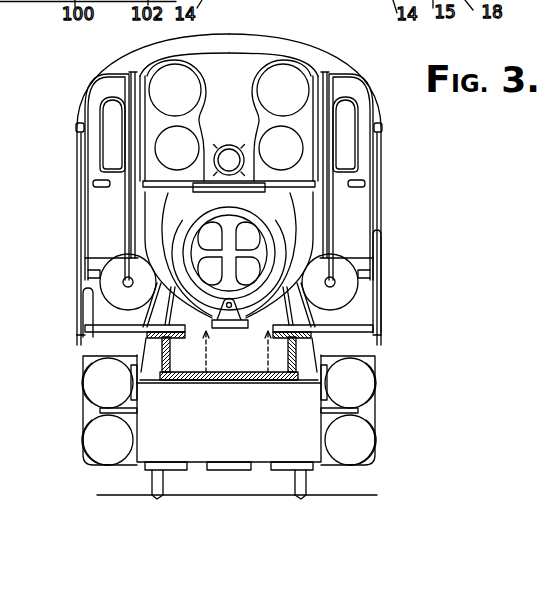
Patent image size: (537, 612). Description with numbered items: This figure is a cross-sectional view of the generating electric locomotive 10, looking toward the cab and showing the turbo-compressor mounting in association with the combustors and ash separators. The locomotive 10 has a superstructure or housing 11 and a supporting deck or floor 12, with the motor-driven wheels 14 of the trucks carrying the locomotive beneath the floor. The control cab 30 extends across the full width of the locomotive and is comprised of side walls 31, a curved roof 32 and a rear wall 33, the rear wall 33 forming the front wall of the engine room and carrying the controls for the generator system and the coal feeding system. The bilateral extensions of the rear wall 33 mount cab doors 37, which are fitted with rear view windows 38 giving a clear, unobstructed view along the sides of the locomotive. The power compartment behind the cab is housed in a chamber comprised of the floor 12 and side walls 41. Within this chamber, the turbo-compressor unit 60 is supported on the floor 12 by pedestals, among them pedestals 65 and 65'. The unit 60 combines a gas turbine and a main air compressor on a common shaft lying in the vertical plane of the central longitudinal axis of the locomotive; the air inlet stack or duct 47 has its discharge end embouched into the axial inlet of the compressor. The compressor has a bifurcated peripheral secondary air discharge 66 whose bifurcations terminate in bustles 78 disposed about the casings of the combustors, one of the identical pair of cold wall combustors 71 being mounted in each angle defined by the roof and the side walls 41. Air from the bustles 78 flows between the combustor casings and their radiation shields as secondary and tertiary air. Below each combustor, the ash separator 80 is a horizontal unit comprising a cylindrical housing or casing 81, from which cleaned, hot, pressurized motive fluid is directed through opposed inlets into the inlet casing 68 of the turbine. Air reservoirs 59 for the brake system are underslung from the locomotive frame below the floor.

The generating electric locomotive 10 is at (294, 27).
The superstructure or housing 11 is at (391, 117).
The supporting deck or floor 12 is at (216, 351).
The motor-driven wheels 14 is at (150, 483).
The control cab 30 is at (394, 194).
The side walls 31 is at (78, 203).
The curved roof 32 is at (90, 87).
The rear wall 33 is at (232, 46).
The cab doors 37 is at (98, 227).
The rear view windows 38 is at (103, 148).
The side walls 41 is at (138, 198).
The air inlet stack or duct 47 is at (229, 253).
The air reservoirs 59 is at (90, 437).
The turbo-compressor unit 60 is at (273, 351).
The pedestal 65 is at (229, 331).
The pedestal 65' is at (235, 335).
The bifurcated peripheral secondary air discharge 66 is at (229, 138).
The inlet casing 68 is at (229, 254).
The cold wall combustor 71 is at (229, 90).
The bustles 78 is at (157, 73).
The ash separator 80 is at (163, 143).
The cylindrical housing or casing 81 is at (253, 133).